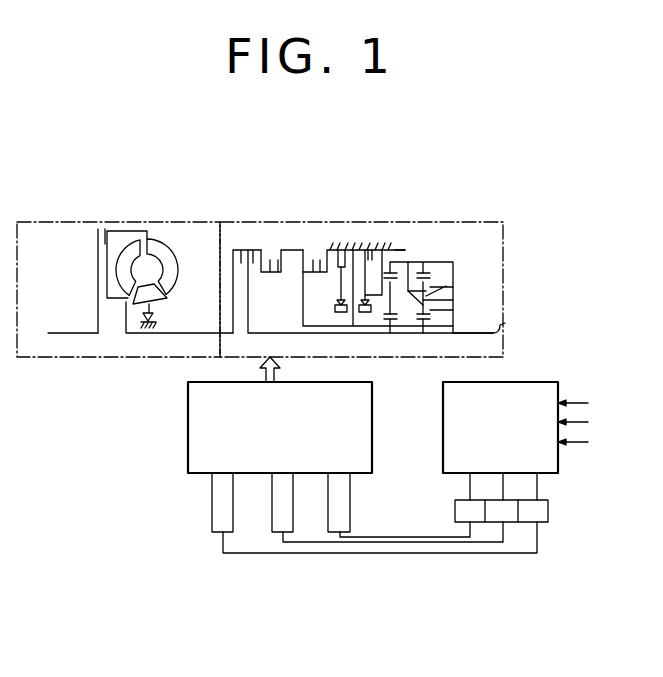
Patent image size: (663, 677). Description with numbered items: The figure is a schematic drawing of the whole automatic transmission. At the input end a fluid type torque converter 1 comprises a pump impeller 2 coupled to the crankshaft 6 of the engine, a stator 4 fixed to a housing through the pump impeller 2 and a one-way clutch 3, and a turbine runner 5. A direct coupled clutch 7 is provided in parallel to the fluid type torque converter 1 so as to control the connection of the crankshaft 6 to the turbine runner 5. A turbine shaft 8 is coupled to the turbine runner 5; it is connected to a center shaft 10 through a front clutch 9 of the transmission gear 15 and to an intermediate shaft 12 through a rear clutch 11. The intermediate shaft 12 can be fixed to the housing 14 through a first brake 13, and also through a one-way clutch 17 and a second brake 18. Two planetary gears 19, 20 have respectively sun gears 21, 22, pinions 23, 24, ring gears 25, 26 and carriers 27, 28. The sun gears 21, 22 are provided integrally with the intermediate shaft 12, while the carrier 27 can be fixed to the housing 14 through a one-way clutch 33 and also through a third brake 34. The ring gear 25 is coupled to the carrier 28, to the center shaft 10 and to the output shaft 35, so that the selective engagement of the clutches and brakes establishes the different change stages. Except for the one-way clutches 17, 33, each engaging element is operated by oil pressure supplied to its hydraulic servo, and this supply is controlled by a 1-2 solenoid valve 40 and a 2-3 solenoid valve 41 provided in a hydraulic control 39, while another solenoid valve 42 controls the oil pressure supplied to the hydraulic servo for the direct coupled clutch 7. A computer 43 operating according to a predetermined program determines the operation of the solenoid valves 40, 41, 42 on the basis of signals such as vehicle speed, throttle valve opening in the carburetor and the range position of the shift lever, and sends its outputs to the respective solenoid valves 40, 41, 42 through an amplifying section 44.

The fluid type torque converter 1 is at (158, 239).
The pump impeller 2 is at (163, 243).
The one-way clutch 3 is at (160, 325).
The stator 4 is at (150, 298).
The turbine runner 5 is at (118, 268).
The crankshaft 6 is at (77, 333).
The direct coupled clutch 7 is at (98, 238).
The turbine shaft 8 is at (201, 333).
The front clutch 9 is at (246, 260).
The center shaft 10 is at (280, 333).
The rear clutch 11 is at (277, 260).
The intermediate shaft 12 is at (310, 322).
The first brake 13 is at (312, 263).
The housing 14 is at (340, 252).
The transmission gear 15 is at (236, 222).
The one-way clutch 17 is at (335, 307).
The second brake 18 is at (366, 258).
The planetary gear 19 is at (406, 306).
The planetary gear 20 is at (459, 302).
The sun gear 21 is at (395, 325).
The sun gear 22 is at (424, 323).
The pinion 23 is at (433, 288).
The pinion 24 is at (438, 312).
The ring gear 25 is at (394, 270).
The ring gear 26 is at (427, 268).
The carrier 27 is at (396, 248).
The carrier 28 is at (443, 300).
The one-way clutch 33 is at (368, 313).
The third brake 34 is at (378, 245).
The output shaft 35 is at (505, 323).
The hydraulic control 39 is at (350, 428).
The 1-2 solenoid valve 40 is at (222, 508).
The 2-3 solenoid valve 41 is at (285, 508).
The solenoid valve 42 is at (350, 517).
The computer 43 is at (545, 397).
The amplifying section 44 is at (548, 515).